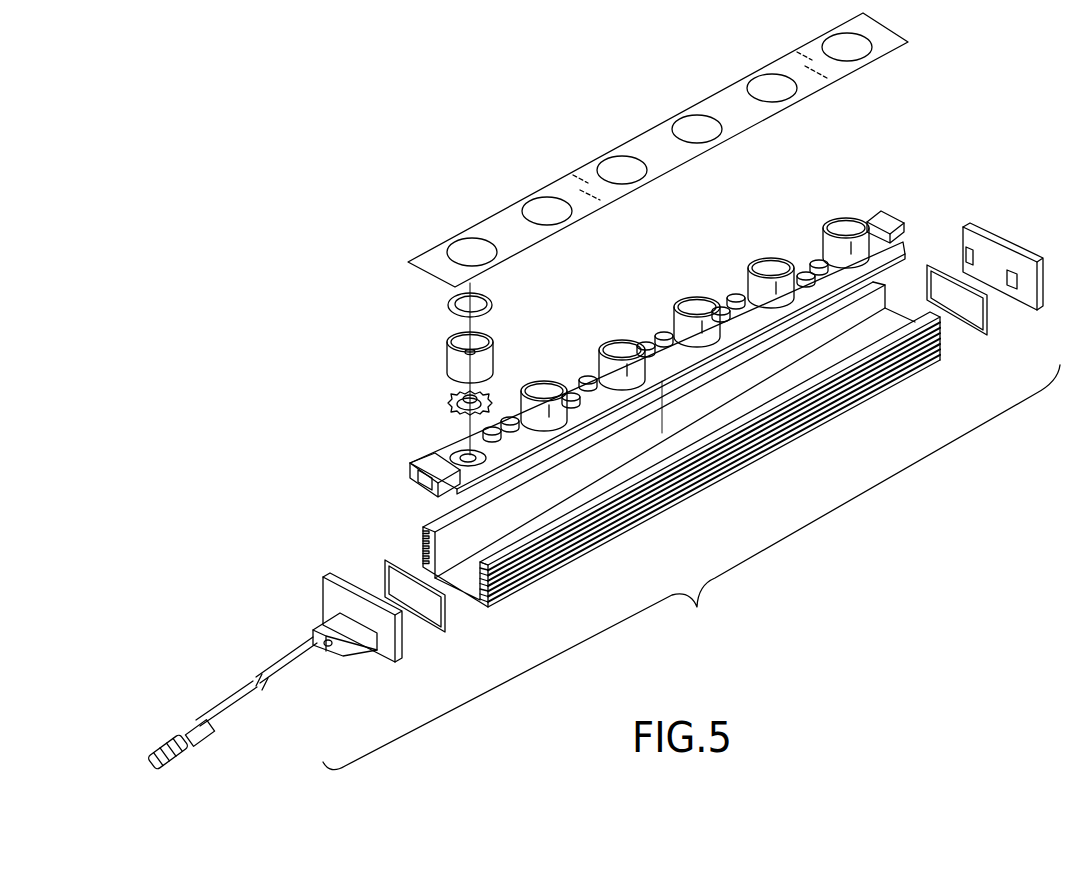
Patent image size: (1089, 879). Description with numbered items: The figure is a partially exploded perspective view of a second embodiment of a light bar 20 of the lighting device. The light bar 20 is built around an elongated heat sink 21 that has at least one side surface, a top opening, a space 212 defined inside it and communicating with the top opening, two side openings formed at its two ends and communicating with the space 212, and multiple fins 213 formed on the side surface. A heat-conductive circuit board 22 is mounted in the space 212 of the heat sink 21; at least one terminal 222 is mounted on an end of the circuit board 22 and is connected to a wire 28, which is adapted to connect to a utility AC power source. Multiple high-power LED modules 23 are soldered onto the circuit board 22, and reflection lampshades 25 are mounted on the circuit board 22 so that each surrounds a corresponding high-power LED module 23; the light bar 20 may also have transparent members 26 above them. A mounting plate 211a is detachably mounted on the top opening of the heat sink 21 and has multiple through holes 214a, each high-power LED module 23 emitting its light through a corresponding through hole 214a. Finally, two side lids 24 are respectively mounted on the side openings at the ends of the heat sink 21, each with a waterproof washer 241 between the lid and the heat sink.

The light bar 20 is at (483, 648).
The heat sink 21 is at (465, 570).
The space 212 is at (518, 518).
The fins 213 is at (423, 548).
The circuit board 22 is at (443, 440).
The terminal 222 is at (420, 482).
The high-power LED module 23 is at (446, 392).
The reflection lampshade 25 is at (454, 361).
The transparent member 26 is at (458, 305).
The mounting plate 211a is at (517, 237).
The through hole 214a is at (452, 258).
The side lid 24 is at (333, 602).
The waterproof washer 241 is at (383, 573).
The wire 28 is at (282, 667).